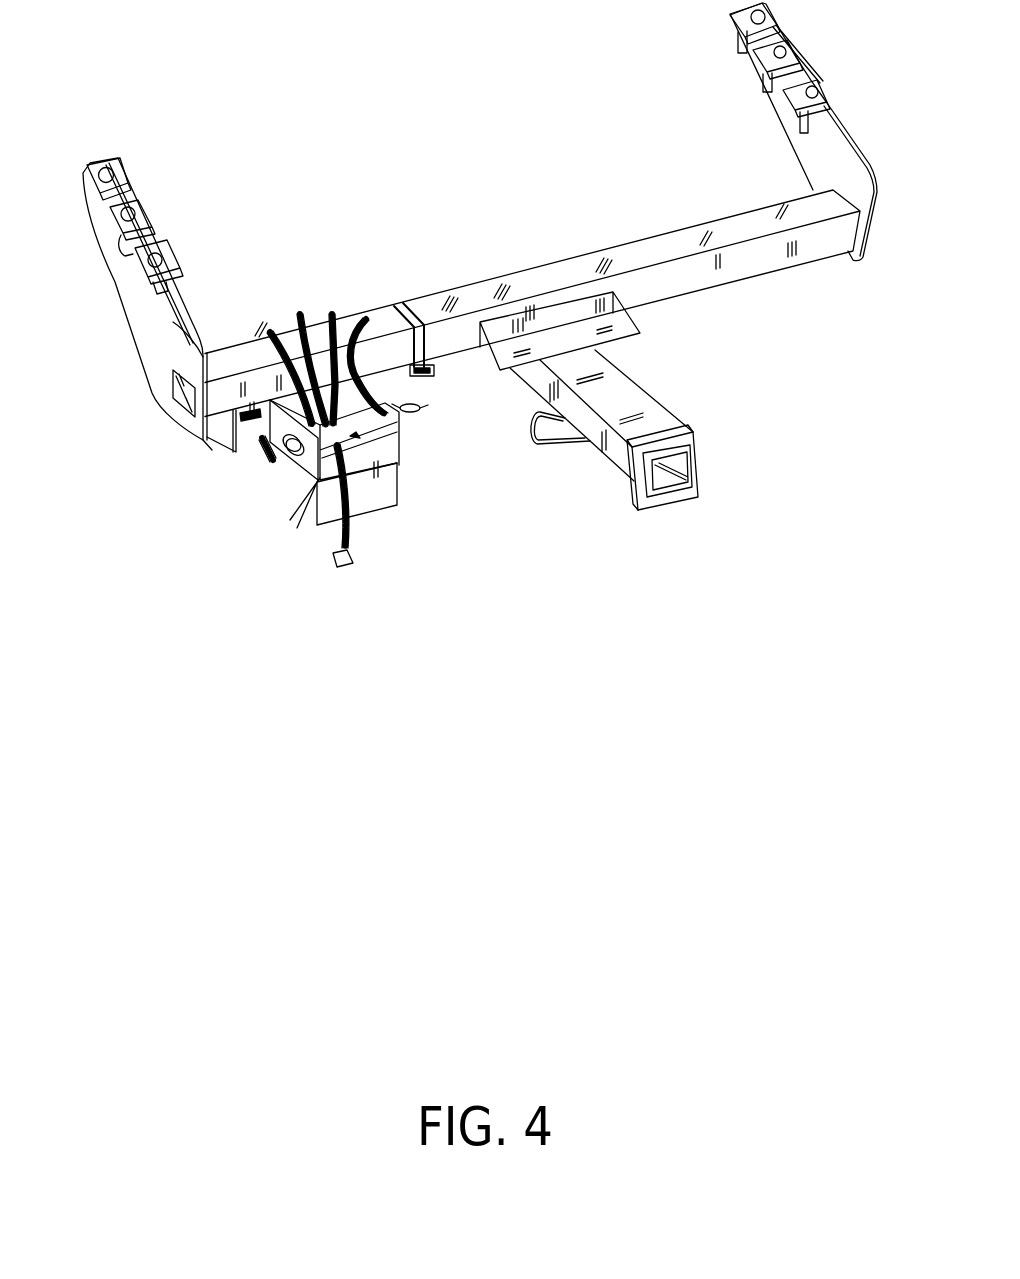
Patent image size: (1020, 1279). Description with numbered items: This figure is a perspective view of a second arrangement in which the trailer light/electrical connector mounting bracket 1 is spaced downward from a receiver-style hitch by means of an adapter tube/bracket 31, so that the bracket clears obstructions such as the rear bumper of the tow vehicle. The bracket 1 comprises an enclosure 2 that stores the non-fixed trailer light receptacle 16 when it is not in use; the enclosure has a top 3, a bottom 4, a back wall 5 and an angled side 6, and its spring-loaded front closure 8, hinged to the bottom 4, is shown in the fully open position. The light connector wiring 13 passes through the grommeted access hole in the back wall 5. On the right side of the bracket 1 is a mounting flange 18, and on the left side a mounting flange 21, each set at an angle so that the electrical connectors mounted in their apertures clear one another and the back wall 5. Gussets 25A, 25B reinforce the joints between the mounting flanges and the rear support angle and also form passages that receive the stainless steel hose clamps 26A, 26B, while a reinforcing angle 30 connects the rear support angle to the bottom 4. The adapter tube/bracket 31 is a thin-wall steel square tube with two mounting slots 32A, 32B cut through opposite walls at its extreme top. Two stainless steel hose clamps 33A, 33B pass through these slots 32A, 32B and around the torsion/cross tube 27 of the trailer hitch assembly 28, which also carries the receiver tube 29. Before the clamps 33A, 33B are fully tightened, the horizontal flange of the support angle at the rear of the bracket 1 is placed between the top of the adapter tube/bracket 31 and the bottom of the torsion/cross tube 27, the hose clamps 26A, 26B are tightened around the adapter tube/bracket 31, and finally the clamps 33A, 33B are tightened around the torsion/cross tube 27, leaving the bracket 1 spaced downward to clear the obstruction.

The bracket 1 is at (311, 489).
The enclosure 2 is at (360, 434).
The top 3 is at (357, 450).
The bottom 4 is at (378, 490).
The back wall 5 is at (365, 464).
The angled side 6 is at (318, 491).
The front closure 8 is at (381, 516).
The light connector wiring 13 is at (296, 317).
The receptacle 16 is at (340, 575).
The mounting flange 18 is at (406, 428).
The mounting flange 21 is at (314, 481).
The gusset 25A is at (261, 313).
The gusset 25B is at (327, 310).
The stainless steel hose clamp 26A is at (275, 458).
The stainless steel hose clamp 26B is at (368, 315).
The torsion/cross tube 27 is at (599, 243).
The trailer hitch assembly 28 is at (782, 150).
The receiver tube 29 is at (653, 396).
The reinforcing angle 30 is at (304, 318).
The adapter tube/bracket 31 is at (230, 451).
The mounting slot 32A is at (245, 429).
The mounting slot 32B is at (429, 380).
The stainless steel hose clamp 33A is at (197, 325).
The stainless steel hose clamp 33B is at (395, 303).